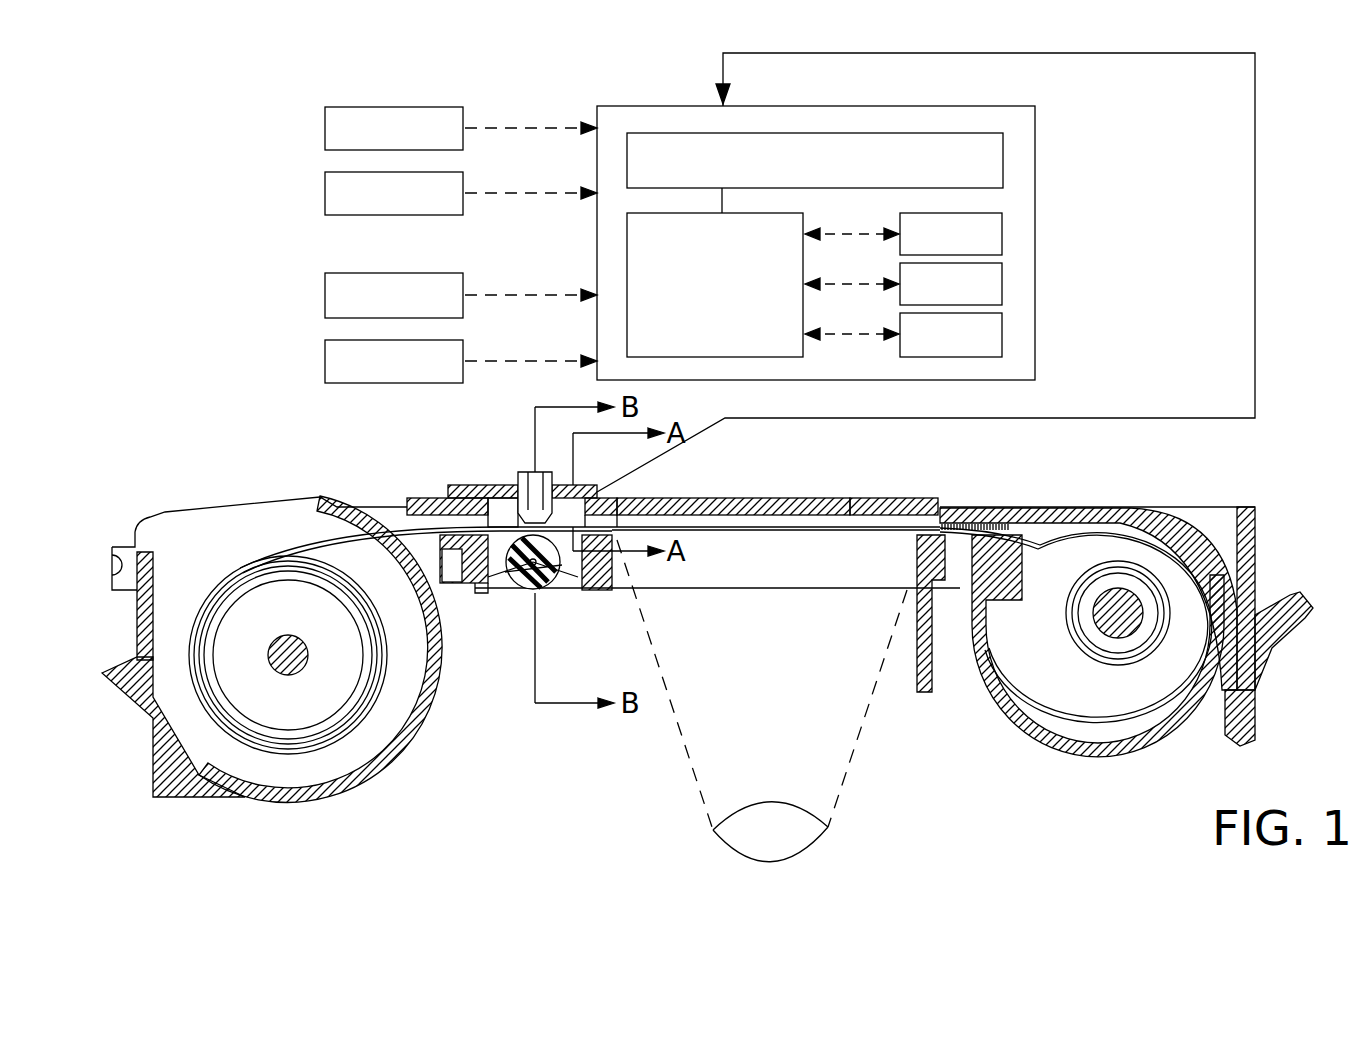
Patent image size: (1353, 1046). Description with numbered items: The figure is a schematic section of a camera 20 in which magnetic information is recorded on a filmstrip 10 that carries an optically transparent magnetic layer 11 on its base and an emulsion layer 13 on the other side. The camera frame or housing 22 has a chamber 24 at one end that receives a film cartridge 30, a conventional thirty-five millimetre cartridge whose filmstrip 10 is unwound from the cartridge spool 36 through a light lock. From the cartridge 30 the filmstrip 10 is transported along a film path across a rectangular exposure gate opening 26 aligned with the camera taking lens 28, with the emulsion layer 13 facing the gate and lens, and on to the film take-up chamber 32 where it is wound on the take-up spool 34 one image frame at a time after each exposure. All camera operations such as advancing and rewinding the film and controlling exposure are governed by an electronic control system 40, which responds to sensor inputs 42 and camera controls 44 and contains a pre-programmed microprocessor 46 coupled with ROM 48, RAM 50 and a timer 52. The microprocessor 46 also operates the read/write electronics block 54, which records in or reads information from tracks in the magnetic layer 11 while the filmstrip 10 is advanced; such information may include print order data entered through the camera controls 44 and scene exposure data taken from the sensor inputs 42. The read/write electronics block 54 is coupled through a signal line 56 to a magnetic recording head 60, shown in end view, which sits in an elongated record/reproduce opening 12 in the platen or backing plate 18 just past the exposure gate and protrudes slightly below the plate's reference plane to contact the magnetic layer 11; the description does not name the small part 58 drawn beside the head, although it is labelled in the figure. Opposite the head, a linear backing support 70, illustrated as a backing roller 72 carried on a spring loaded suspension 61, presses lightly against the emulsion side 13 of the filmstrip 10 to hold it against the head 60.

The filmstrip 10 is at (790, 497).
The magnetic layer 11 is at (500, 490).
The record/reproduce opening 12 is at (472, 482).
The emulsion layer 13 is at (722, 590).
The backing plate 18 is at (895, 497).
The camera 20 is at (215, 455).
The housing 22 is at (1005, 730).
The chamber 24 is at (1210, 515).
The exposure gate opening 26 is at (787, 620).
The camera taking lens 28 is at (768, 808).
The film cartridge 30 is at (1212, 592).
The film take-up chamber 32 is at (376, 737).
The take-up spool 34 is at (244, 611).
The cartridge spool 36 is at (1122, 614).
The electronic control system 40 is at (600, 72).
The sensor inputs 42 is at (325, 128).
The camera controls 44 is at (325, 295).
The microprocessor 46 is at (699, 342).
The ROM 48 is at (1002, 234).
The RAM 50 is at (1002, 284).
The timer 52 is at (1002, 334).
The read/write electronics block 54 is at (1003, 160).
The signal line 56 is at (1256, 238).
The read/write head 58 is at (597, 495).
The magnetic recording head 60 is at (530, 470).
The spring loaded suspension 61 is at (497, 592).
The backing support 70 is at (515, 620).
The backing roller 72 is at (545, 590).